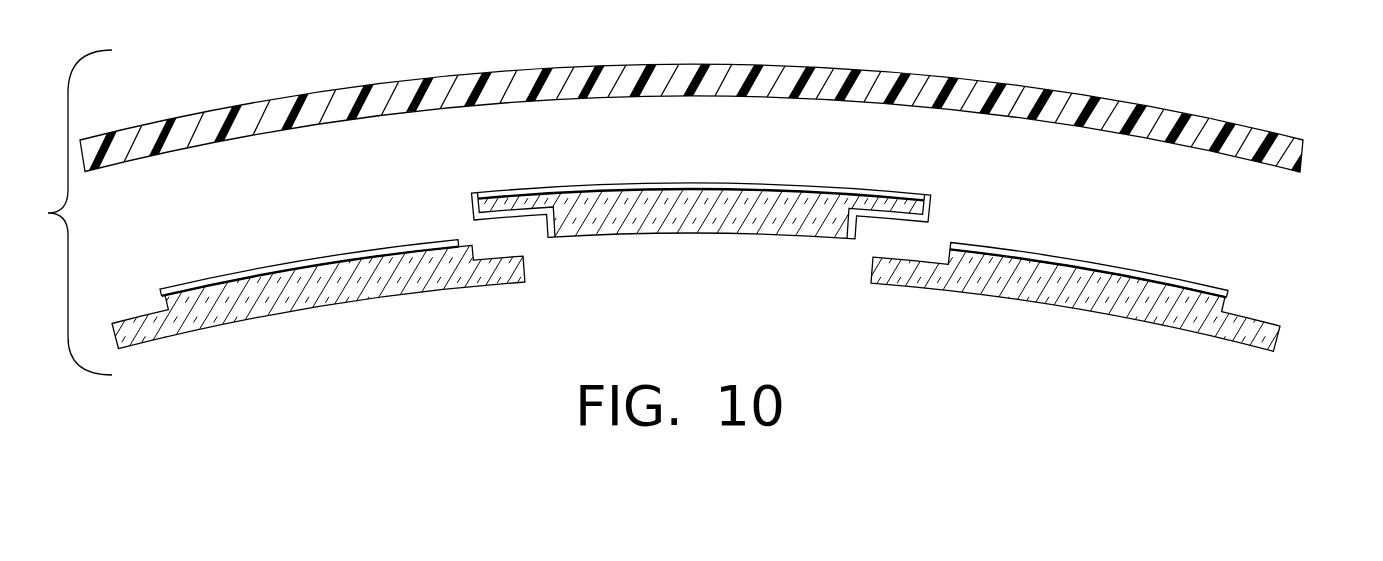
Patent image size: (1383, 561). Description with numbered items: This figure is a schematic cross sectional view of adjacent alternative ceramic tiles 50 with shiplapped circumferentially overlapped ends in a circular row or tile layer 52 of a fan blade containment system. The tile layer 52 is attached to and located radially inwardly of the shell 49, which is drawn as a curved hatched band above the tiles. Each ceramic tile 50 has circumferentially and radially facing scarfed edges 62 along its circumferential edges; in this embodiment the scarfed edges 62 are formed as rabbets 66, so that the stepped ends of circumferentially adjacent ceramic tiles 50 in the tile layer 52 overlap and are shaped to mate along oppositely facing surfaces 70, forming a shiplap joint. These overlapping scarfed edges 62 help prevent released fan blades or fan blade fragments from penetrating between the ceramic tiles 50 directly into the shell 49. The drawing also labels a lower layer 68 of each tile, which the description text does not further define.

The shell 49 is at (783, 65).
The ceramic tile 50 is at (697, 193).
The tile layer 52 is at (711, 260).
The scarfed edge 62 is at (121, 283).
The rabbet 66 is at (146, 306).
The bottom layer of panel 68 is at (750, 235).
The oppositely facing surface 70 is at (902, 260).